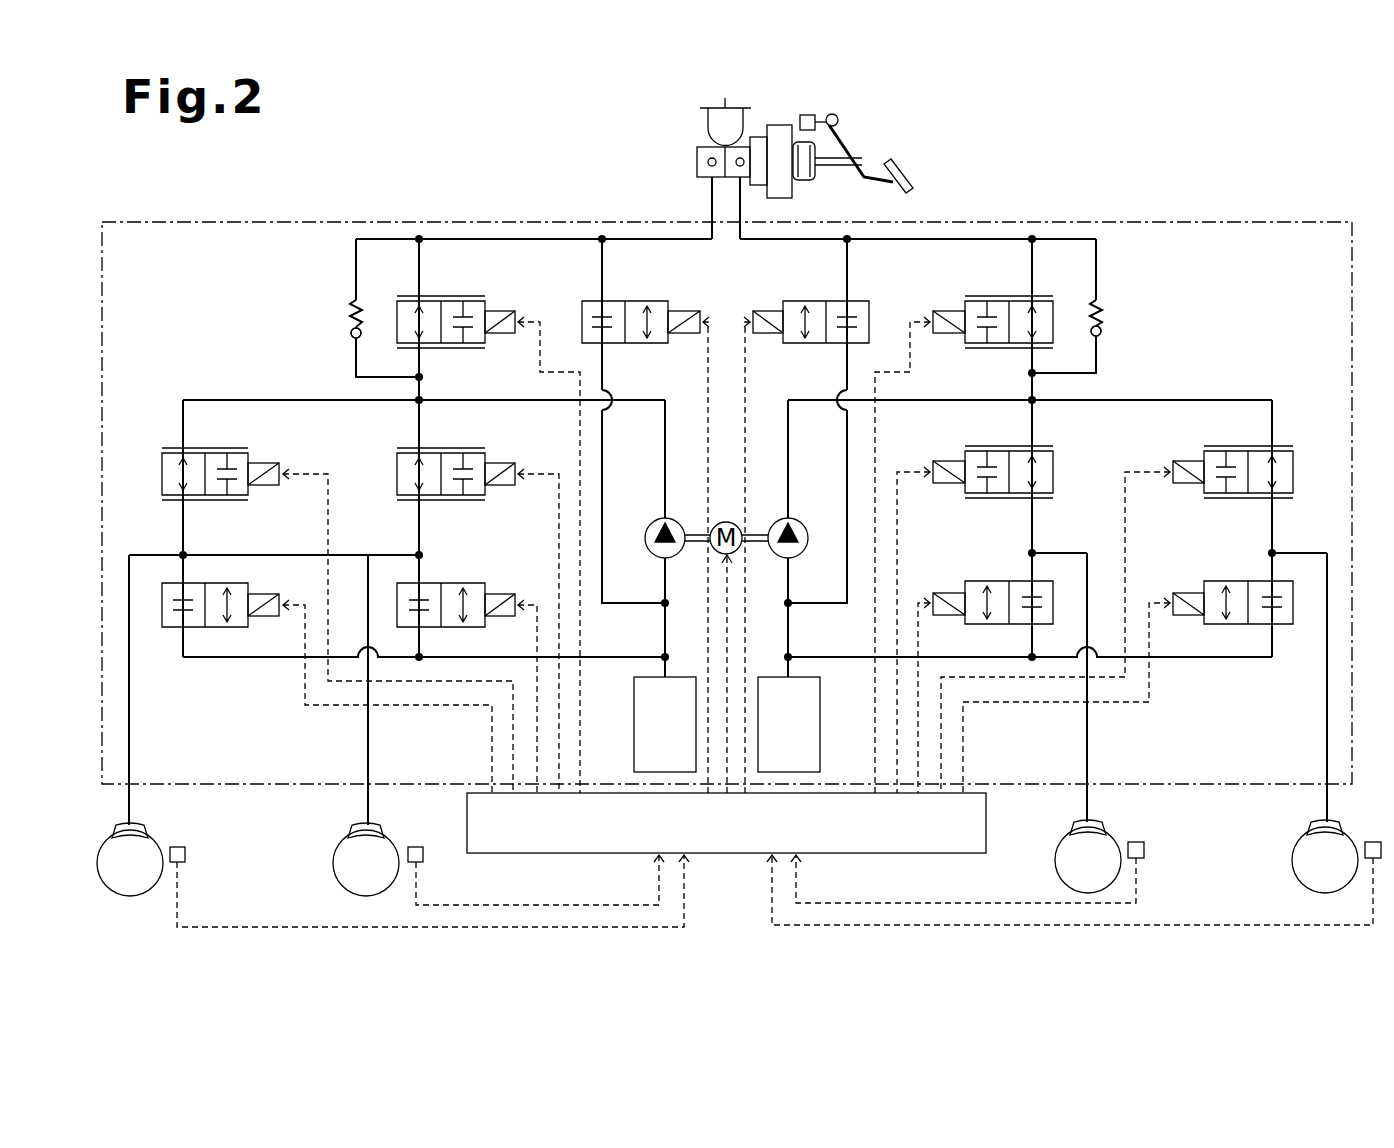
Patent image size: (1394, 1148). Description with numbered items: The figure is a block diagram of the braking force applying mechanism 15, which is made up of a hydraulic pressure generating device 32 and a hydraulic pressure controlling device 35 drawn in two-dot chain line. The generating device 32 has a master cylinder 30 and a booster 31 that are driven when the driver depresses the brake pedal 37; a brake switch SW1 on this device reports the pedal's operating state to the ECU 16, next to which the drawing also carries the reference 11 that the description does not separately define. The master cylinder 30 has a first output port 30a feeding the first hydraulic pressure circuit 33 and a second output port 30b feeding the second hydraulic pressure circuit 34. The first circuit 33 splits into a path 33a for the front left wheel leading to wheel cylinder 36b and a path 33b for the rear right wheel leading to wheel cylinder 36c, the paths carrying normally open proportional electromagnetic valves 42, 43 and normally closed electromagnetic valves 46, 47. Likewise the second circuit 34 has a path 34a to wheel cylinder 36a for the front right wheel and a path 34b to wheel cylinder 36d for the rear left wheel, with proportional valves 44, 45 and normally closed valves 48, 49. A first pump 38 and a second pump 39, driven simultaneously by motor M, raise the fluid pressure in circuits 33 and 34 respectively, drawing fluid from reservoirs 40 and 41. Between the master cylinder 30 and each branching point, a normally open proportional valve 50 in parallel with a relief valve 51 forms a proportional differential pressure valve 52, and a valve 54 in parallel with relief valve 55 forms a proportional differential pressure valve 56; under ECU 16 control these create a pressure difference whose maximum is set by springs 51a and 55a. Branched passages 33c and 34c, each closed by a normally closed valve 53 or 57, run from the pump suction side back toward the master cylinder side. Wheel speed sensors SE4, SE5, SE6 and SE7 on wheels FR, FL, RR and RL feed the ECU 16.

The brake control device 11 is at (879, 853).
The braking force applying mechanism 15 is at (1318, 202).
The ECU 16 is at (720, 877).
The master cylinder 30 is at (697, 152).
The first output port 30a is at (768, 175).
The second output port 30b is at (700, 163).
The booster 31 is at (780, 125).
The hydraulic pressure generating device 32 is at (688, 110).
The first hydraulic pressure circuit 33 is at (918, 240).
The path for the front left wheel 33a is at (1040, 413).
The path for the rear right wheel 33b is at (1147, 399).
The branched hydraulic pressure passage 33c is at (846, 545).
The second hydraulic pressure circuit 34 is at (532, 240).
The path for the front right wheel 34a is at (424, 413).
The path for the rear left wheel 34b is at (300, 399).
The branched hydraulic pressure passage 34c is at (602, 545).
The hydraulic pressure controlling device 35 is at (1208, 220).
The wheel cylinder 36a is at (352, 826).
The wheel cylinder 36b is at (1105, 823).
The wheel cylinder 36c is at (1308, 823).
The wheel cylinder 36d is at (145, 826).
The brake pedal 37 is at (910, 178).
The first pump 38 is at (797, 523).
The second pump 39 is at (655, 523).
The reservoir 40 is at (772, 676).
The reservoir 41 is at (680, 676).
The normally open type proportional electromagnetic valve 42 is at (998, 450).
The normally open type proportional electromagnetic valve 43 is at (1236, 450).
The normally open type proportional electromagnetic valve 44 is at (492, 452).
The normally open type proportional electromagnetic valve 45 is at (215, 450).
The normally closed type electromagnetic valve 46 is at (1008, 580).
The normally closed type electromagnetic valve 47 is at (1238, 580).
The normally closed type electromagnetic valve 48 is at (478, 582).
The normally closed type electromagnetic valve 49 is at (238, 582).
The normally open type proportional electromagnetic valve 50 is at (1043, 298).
The relief valve 51 is at (1096, 303).
The spring 51a is at (1103, 322).
The proportional differential pressure valve 52 is at (1029, 464).
The normally closed type electromagnetic valve 53 is at (814, 345).
The normally open type proportional electromagnetic valve 54 is at (408, 298).
The relief valve 55 is at (356, 303).
The spring 55a is at (350, 322).
The proportional differential pressure valve 56 is at (427, 465).
The normally closed type electromagnetic valve 57 is at (636, 345).
The brake switch SW1 is at (816, 117).
The wheel speed sensor SE4 is at (418, 846).
The wheel speed sensor SE5 is at (1150, 850).
The wheel speed sensor SE6 is at (1373, 841).
The wheel speed sensor SE7 is at (190, 855).